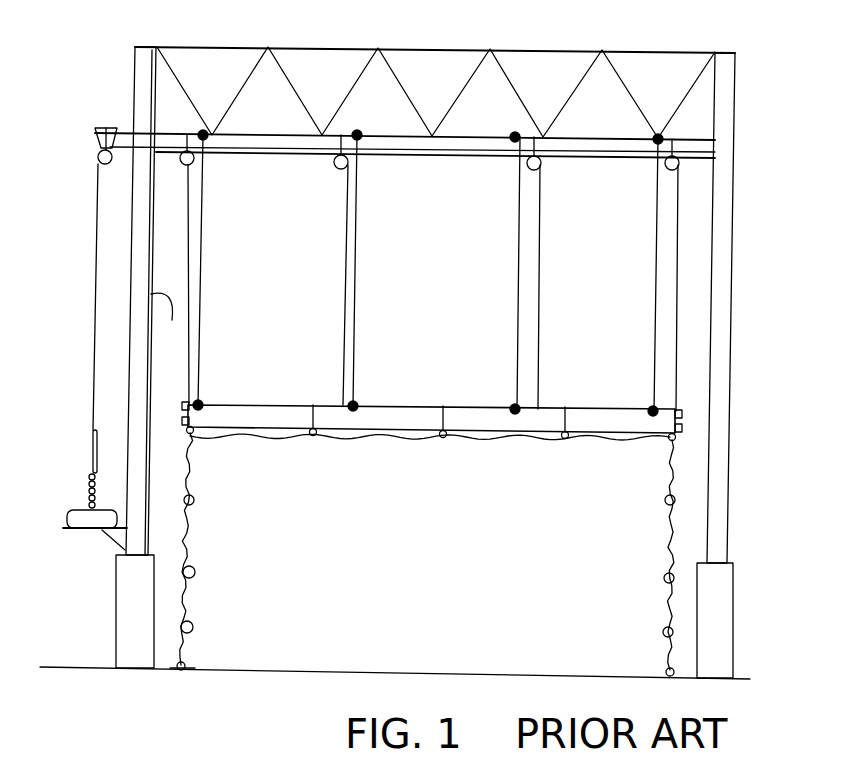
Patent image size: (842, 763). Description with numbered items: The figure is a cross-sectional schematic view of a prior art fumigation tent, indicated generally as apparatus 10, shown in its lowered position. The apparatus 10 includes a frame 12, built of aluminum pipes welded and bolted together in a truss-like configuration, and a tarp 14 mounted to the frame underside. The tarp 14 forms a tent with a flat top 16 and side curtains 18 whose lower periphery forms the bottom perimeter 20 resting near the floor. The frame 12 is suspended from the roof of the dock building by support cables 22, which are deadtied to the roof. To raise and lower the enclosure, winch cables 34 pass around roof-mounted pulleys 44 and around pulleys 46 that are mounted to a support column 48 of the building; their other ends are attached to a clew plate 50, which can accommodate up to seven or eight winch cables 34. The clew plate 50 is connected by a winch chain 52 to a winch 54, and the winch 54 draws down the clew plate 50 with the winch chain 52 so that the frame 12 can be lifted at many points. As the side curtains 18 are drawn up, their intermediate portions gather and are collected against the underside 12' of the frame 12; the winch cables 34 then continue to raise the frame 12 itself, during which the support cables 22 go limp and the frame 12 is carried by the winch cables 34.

The apparatus 10 is at (450, 32).
The frame 12 is at (432, 397).
The underside of the frame 12' is at (504, 459).
The tarp 14 is at (236, 439).
The top 16 is at (371, 441).
The side curtains 18 is at (191, 545).
The bottom perimeter 20 is at (176, 665).
The support cables 22 is at (343, 312).
The winch cables 34 is at (94, 286).
The roof-mounted pulleys 44 is at (336, 167).
The pulleys 46 is at (96, 156).
The support columns 48 is at (170, 323).
The clew plate 50 is at (92, 448).
The winch chain 52 is at (90, 486).
The winch 54 is at (68, 518).